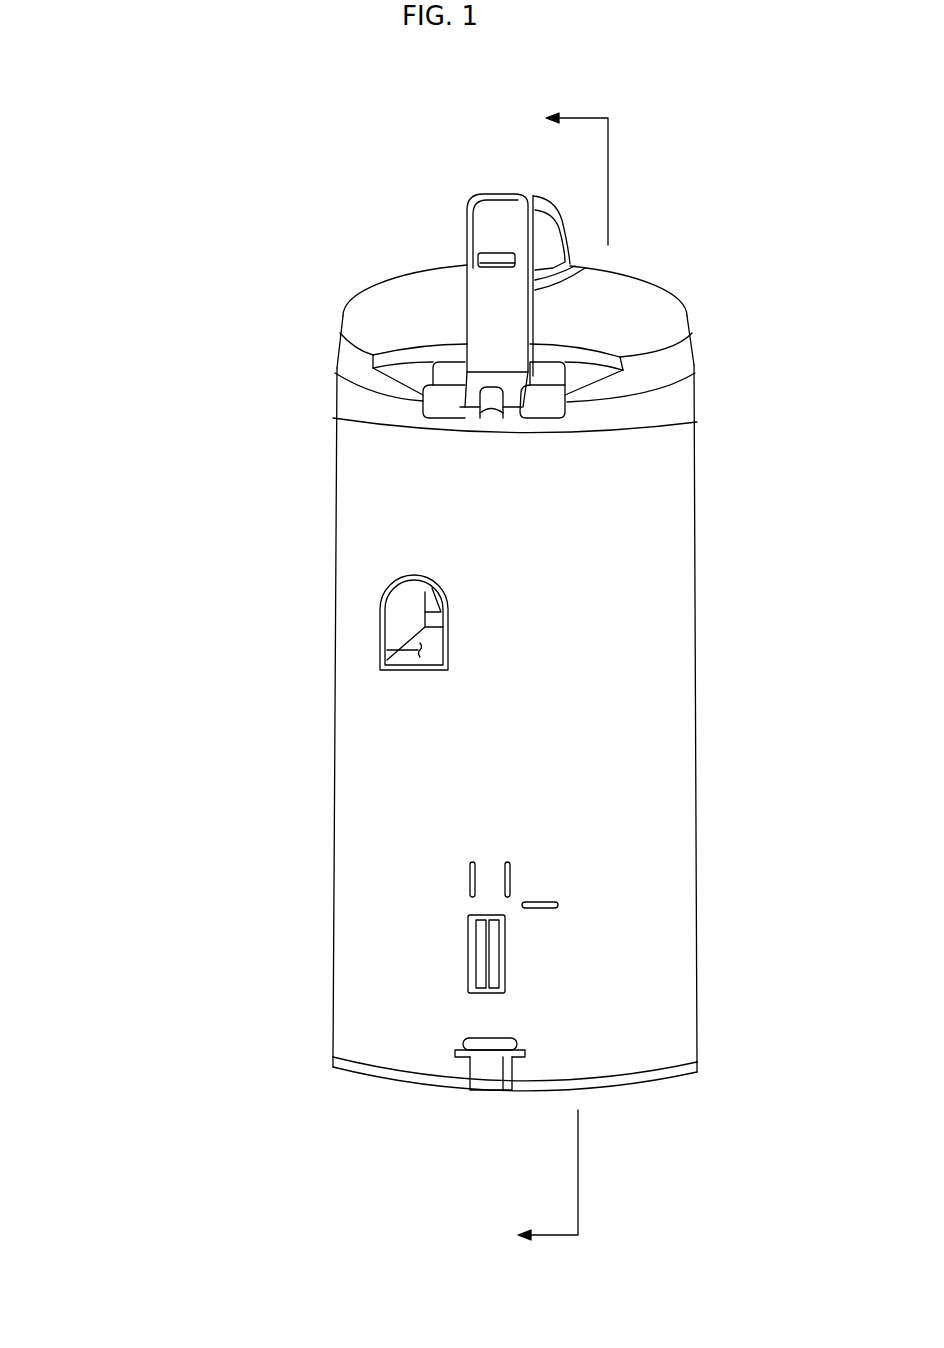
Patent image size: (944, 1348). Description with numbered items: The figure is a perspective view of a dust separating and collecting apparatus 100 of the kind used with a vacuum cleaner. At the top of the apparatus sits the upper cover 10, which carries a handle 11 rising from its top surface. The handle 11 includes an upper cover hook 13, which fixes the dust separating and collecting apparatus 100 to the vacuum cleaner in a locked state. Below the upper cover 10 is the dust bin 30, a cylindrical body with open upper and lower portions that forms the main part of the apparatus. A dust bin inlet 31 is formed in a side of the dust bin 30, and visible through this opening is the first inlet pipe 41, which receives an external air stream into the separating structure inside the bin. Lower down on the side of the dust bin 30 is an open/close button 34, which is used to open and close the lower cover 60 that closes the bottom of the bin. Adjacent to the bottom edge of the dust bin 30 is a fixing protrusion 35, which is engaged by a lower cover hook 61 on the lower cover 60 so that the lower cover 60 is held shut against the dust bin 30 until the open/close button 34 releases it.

The dust separating and collecting apparatus 100 is at (110, 124).
The upper cover 10 is at (415, 304).
The handle 11 is at (492, 218).
The upper cover hook 13 is at (503, 266).
The dust bin 30 is at (417, 797).
The dust bin inlet 31 is at (383, 613).
The first inlet pipe 41 is at (388, 648).
The open/close button 34 is at (472, 968).
The fixing protrusion 35 is at (547, 1053).
The lower cover 60 is at (672, 1075).
The lower cover hook 61 is at (482, 1082).